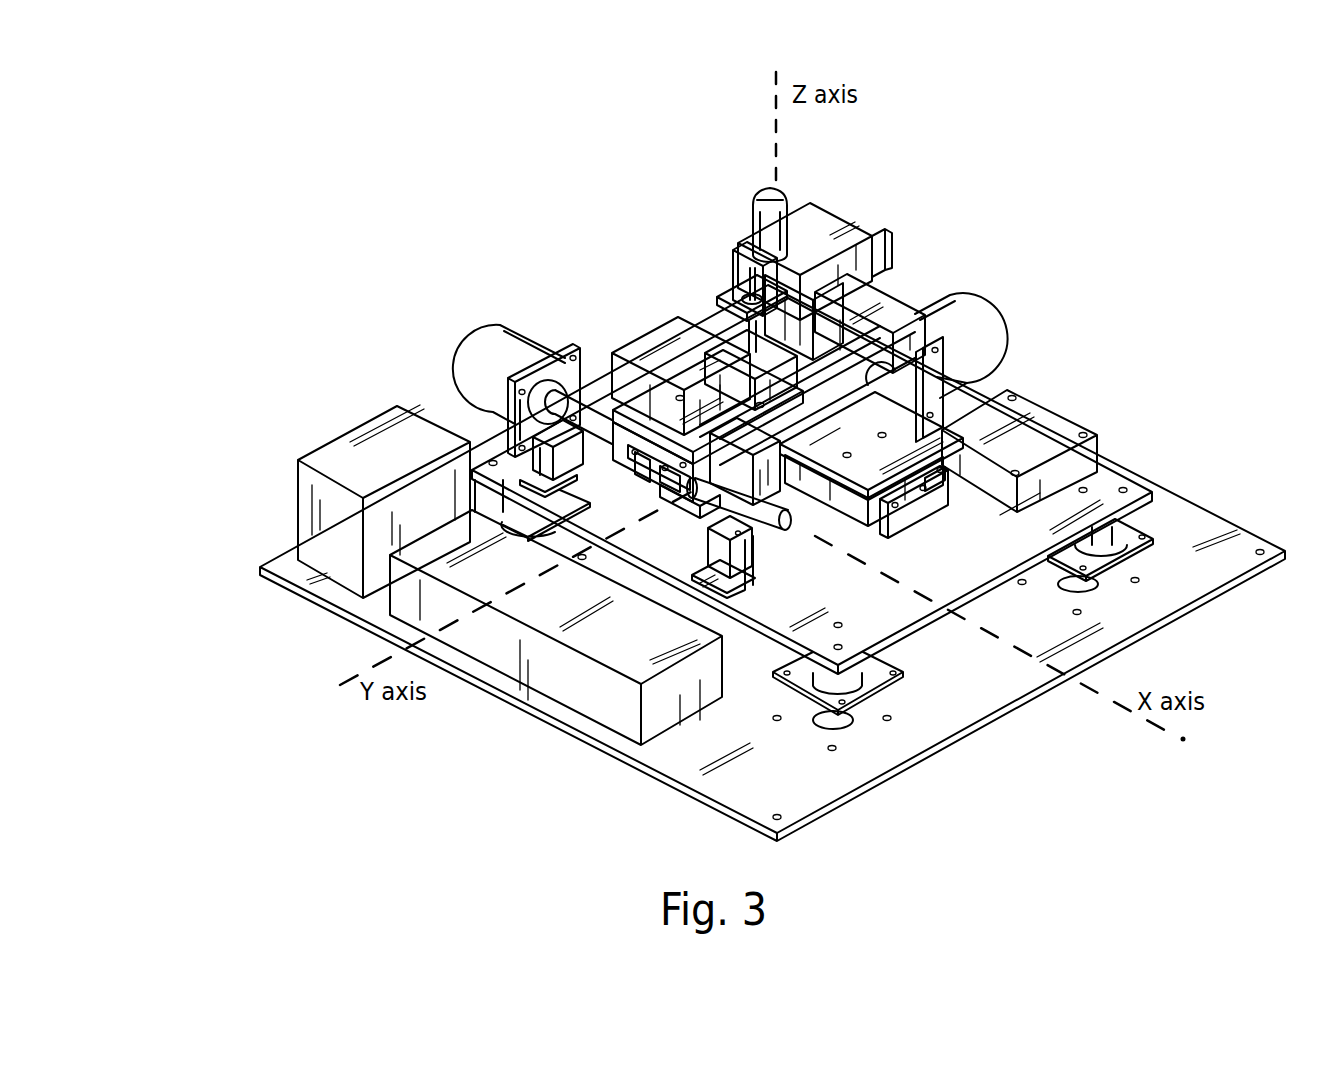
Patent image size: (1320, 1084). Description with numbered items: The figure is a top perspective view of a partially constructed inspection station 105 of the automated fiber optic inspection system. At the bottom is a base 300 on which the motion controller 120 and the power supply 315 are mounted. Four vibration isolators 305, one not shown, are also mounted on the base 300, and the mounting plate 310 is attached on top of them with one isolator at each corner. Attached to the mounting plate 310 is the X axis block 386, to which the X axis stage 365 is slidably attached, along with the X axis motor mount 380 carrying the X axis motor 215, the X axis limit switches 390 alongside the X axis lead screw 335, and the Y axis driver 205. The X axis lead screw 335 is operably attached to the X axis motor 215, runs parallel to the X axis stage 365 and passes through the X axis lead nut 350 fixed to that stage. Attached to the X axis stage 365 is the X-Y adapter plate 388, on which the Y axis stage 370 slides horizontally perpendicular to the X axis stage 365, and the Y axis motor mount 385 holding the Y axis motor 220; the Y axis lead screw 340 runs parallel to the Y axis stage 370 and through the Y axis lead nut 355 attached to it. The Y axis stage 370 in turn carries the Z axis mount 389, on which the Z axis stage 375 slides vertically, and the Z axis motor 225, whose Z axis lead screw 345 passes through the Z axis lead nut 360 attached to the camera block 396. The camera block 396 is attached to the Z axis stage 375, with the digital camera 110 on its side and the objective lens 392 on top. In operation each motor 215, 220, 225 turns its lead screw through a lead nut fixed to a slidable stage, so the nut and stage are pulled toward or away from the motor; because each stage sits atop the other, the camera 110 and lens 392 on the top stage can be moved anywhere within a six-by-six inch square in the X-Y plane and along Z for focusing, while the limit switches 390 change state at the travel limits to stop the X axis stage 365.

The inspection station 105 is at (262, 610).
The digital camera 110 is at (882, 313).
The motion controller 120 is at (345, 447).
The Y axis driver 205 is at (1040, 428).
The X axis motor 215 is at (480, 347).
The Y axis motor 220 is at (975, 318).
The Z axis motor 225 is at (670, 350).
The base 300 is at (930, 728).
The vibration isolators 305 is at (880, 657).
The mounting plate 310 is at (1108, 480).
The power supply 315 is at (622, 652).
The X axis lead screw 335 is at (757, 527).
The Y axis lead screw 340 is at (705, 505).
The Z axis lead screw 345 is at (742, 255).
The X axis lead nut 350 is at (678, 508).
The Y axis lead nut 355 is at (792, 505).
The Z axis lead nut 360 is at (727, 290).
The X axis stage 365 is at (935, 493).
The Y axis stage 370 is at (655, 455).
The Z axis stage 375 is at (820, 215).
The X axis motor mount 380 is at (573, 347).
The Y axis motor mount 385 is at (960, 390).
The X axis block 386 is at (905, 525).
The X-Y adapter plate 388 is at (670, 450).
The Z axis mount 389 is at (877, 252).
The X axis limit switches 390 is at (565, 515).
The objective lens 392 is at (780, 190).
The camera block 396 is at (873, 255).